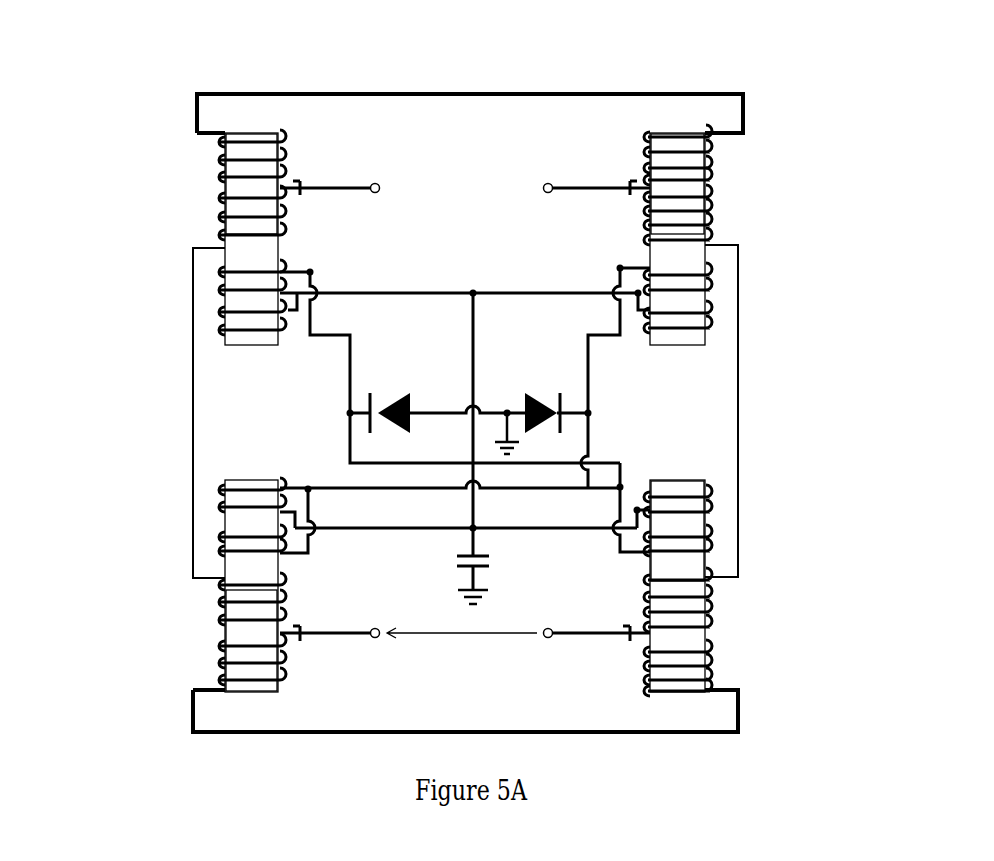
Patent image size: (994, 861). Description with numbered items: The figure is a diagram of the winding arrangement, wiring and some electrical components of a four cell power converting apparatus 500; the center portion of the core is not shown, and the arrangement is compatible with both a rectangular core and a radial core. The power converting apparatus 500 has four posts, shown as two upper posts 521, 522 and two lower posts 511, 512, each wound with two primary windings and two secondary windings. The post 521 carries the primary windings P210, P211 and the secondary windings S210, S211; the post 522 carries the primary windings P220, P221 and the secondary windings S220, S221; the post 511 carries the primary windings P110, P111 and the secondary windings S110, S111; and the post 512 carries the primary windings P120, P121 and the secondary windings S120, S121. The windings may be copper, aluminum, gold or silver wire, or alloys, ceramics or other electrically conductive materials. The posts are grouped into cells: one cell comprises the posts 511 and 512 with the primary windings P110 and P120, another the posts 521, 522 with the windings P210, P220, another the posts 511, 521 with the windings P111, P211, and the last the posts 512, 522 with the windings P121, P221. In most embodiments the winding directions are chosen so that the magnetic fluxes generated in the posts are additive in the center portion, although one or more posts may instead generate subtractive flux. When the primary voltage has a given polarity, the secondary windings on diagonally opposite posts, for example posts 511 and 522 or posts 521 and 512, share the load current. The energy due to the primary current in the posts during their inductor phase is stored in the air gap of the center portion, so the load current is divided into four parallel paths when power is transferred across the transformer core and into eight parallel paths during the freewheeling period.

The power converting apparatus 500 is at (307, 31).
The post 521 is at (250, 125).
The post 522 is at (677, 123).
The post 511 is at (238, 707).
The post 512 is at (675, 475).
The primary winding P210 is at (202, 155).
The primary winding P211 is at (202, 217).
The secondary winding S210 is at (202, 278).
The secondary winding S211 is at (202, 323).
The primary winding P220 is at (727, 163).
The primary winding P221 is at (730, 213).
The secondary winding S220 is at (727, 277).
The secondary winding S221 is at (727, 328).
The secondary winding S111 is at (202, 497).
The secondary winding S110 is at (202, 542).
The primary winding P111 is at (202, 604).
The primary winding P110 is at (202, 667).
The secondary winding S121 is at (727, 498).
The secondary winding S120 is at (725, 537).
The primary winding P121 is at (727, 607).
The primary winding P120 is at (730, 663).